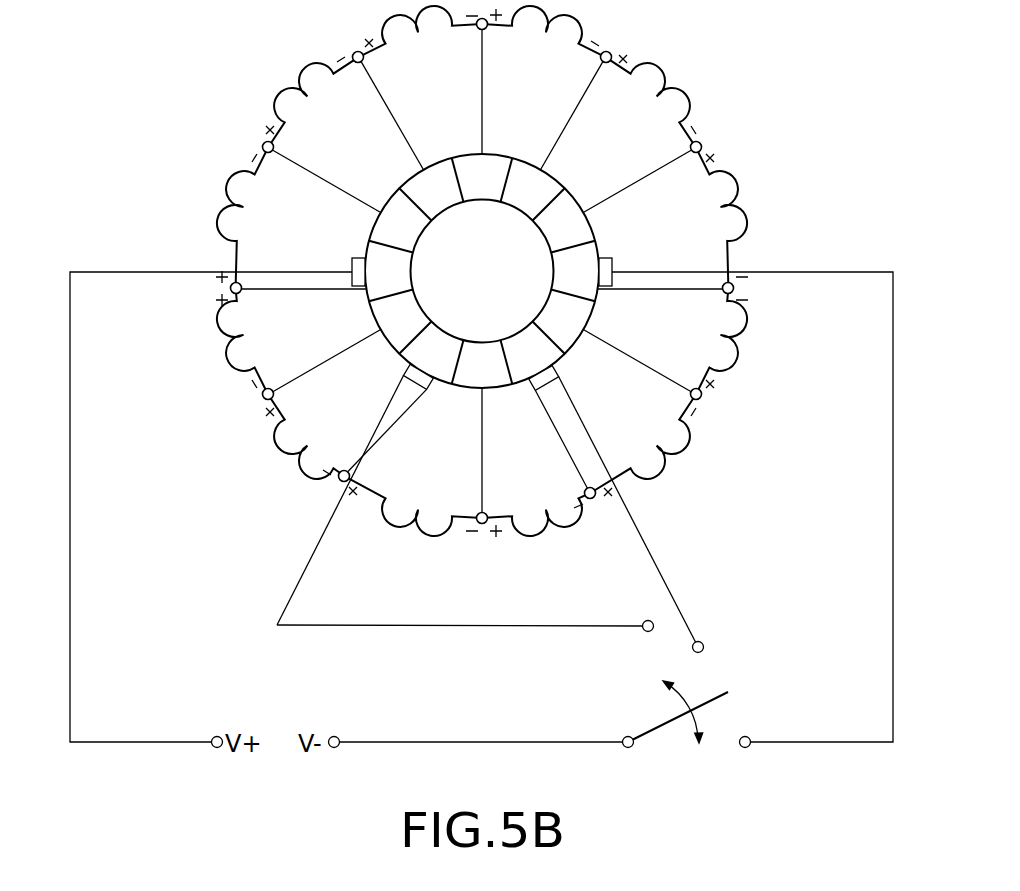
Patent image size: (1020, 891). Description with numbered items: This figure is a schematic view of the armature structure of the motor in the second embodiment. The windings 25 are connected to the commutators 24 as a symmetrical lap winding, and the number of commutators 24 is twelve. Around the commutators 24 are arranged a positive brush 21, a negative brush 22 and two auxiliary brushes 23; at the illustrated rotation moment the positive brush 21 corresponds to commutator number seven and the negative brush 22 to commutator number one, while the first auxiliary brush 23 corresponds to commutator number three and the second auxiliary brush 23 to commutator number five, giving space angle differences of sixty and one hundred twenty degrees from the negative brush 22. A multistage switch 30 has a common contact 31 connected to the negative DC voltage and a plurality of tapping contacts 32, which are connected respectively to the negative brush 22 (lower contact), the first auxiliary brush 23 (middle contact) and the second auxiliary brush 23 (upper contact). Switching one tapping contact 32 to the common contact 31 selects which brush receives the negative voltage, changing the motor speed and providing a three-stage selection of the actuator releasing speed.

The positive brush 21 is at (352, 264).
The negative brush 22 is at (612, 264).
The auxiliary brush 23 is at (555, 374).
The commutator 24 is at (552, 177).
The winding 25 is at (682, 93).
The multistage switch 30 is at (633, 697).
The common contact 31 is at (628, 749).
The tapping contact 32 is at (647, 619).